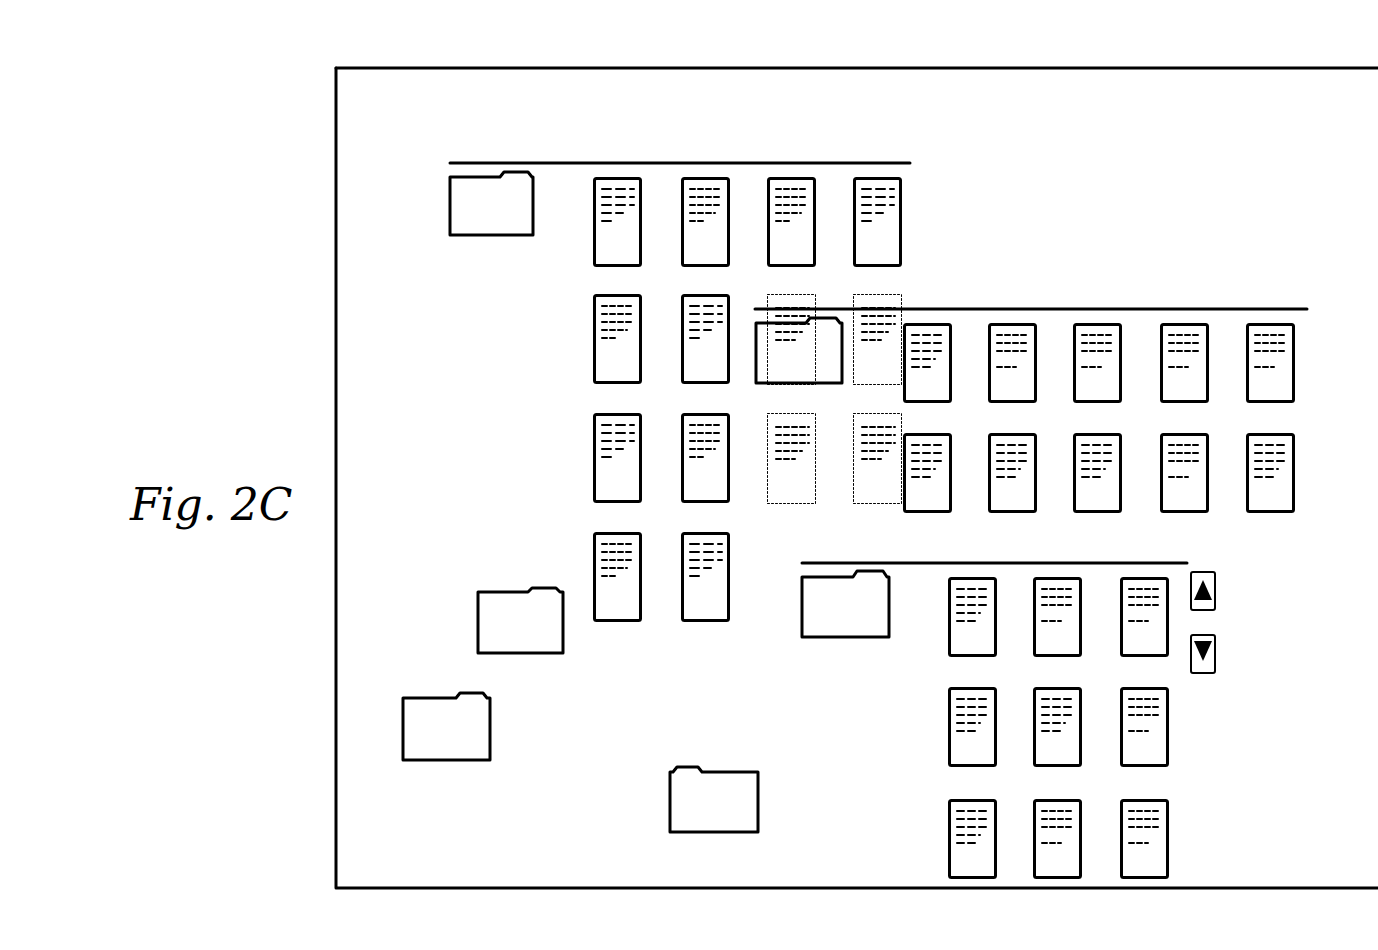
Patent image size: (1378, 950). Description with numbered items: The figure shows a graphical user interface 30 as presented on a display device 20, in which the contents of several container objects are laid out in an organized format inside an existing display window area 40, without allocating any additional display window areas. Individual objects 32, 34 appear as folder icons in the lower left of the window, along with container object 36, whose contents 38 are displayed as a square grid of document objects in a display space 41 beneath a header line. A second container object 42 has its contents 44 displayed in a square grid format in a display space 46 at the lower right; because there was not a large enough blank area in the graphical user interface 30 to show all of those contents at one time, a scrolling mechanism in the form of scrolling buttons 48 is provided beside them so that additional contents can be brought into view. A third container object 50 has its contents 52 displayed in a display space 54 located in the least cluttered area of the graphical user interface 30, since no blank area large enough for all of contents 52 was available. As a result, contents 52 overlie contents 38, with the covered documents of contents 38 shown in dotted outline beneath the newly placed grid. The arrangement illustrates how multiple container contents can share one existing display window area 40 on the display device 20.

The display device 20 is at (1205, 68).
The graphical user interface 30 is at (1010, 85).
The object 32 is at (437, 698).
The object 34 is at (511, 592).
The container object 36 is at (450, 200).
The contents 38 is at (791, 513).
The existing display window area 40 is at (1134, 222).
The display space 41 is at (657, 163).
The container object 42 is at (845, 637).
The contents 44 is at (1177, 744).
The display space 46 is at (1022, 557).
The scrolling buttons 48 is at (1220, 622).
The container object 50 is at (822, 335).
The contents 52 is at (1298, 490).
The display space 54 is at (1100, 305).